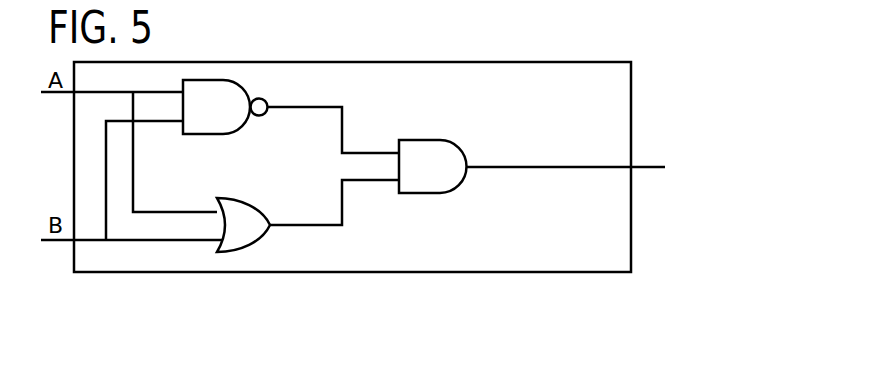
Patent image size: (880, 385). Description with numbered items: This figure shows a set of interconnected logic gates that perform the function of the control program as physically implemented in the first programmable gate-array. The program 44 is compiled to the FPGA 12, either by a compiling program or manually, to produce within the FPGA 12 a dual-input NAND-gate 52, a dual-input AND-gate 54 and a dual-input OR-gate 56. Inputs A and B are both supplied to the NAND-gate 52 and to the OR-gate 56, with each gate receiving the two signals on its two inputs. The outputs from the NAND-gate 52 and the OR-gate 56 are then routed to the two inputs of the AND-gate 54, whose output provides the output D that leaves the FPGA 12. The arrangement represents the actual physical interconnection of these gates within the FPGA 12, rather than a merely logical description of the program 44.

The FPGA 12 is at (642, 88).
The program 44 is at (431, 144).
The dual-input NAND-gate 52 is at (240, 80).
The dual-input AND-gate 54 is at (458, 147).
The dual-input OR-gate 56 is at (262, 238).